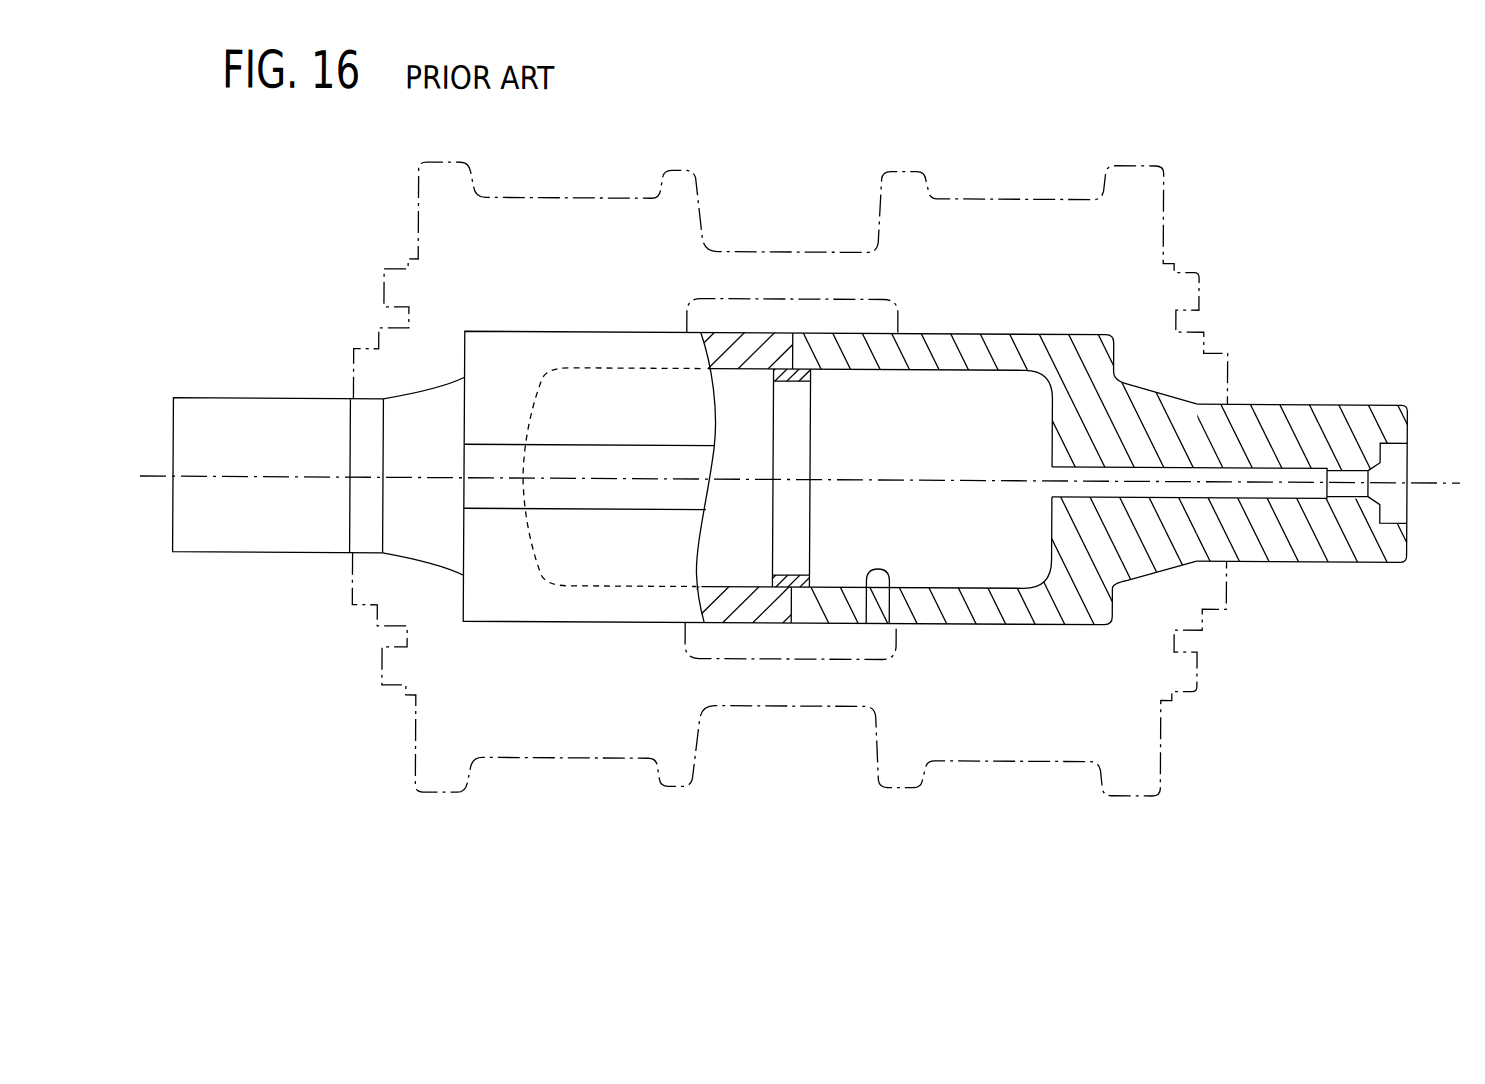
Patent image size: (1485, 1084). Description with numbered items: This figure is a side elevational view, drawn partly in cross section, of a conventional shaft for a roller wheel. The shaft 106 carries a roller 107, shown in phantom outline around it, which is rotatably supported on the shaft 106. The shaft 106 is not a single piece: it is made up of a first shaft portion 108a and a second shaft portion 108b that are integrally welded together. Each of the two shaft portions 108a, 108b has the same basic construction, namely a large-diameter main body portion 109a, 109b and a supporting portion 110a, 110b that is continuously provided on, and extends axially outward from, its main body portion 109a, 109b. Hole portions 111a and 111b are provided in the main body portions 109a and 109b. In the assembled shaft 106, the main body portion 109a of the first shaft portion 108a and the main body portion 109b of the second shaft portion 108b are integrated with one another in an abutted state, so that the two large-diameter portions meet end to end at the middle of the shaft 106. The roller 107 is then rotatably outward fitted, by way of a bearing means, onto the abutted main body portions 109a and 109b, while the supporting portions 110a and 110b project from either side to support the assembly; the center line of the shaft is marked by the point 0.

The shaft 106 is at (1089, 296).
The roller 107 is at (1162, 746).
The first shaft portion 108a is at (960, 329).
The second shaft portion 108b is at (620, 330).
The main body portion 109a is at (970, 621).
The main body portion 109b is at (610, 621).
The supporting portion 110a is at (1322, 548).
The supporting portion 110b is at (255, 552).
The hole portion 111a is at (867, 620).
The hole portion 111b is at (712, 621).
The joint center 0 is at (1428, 476).